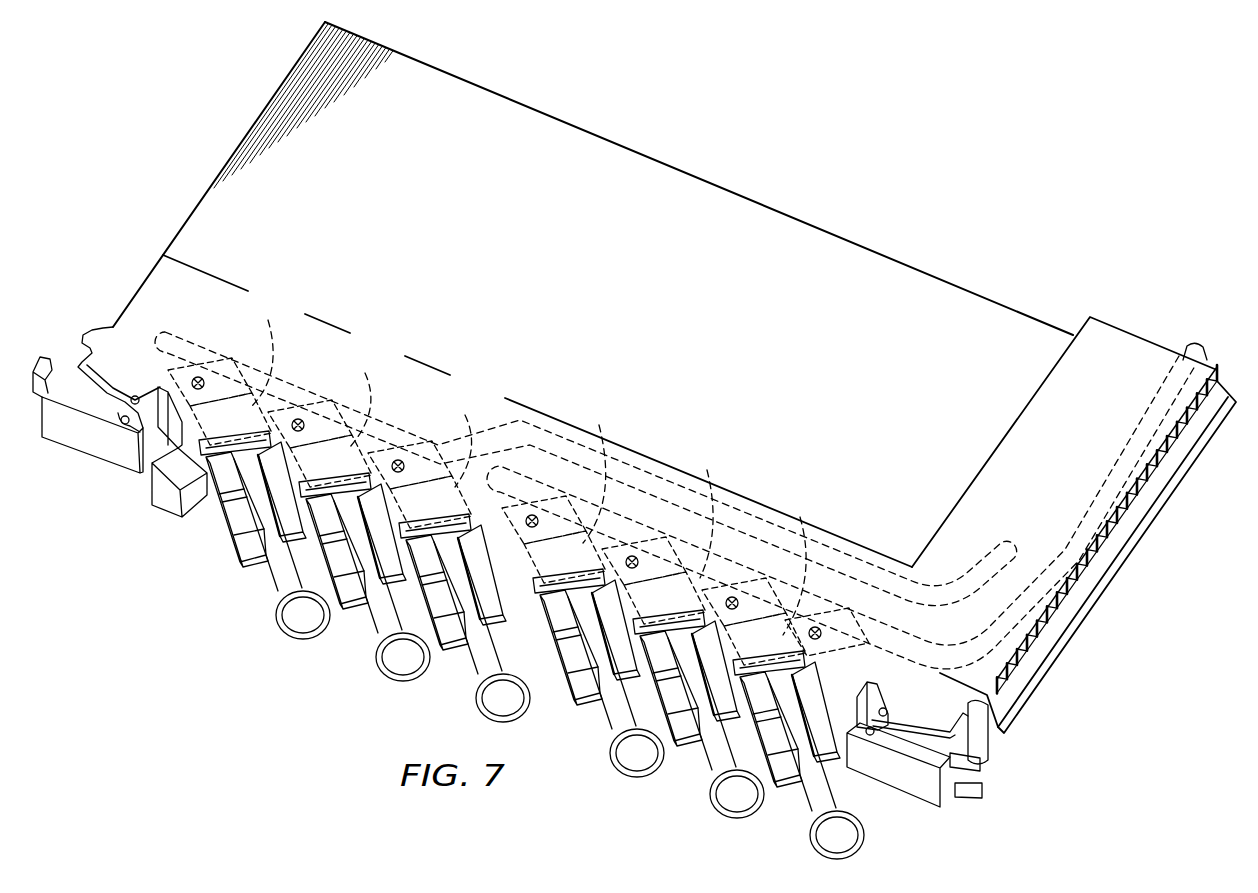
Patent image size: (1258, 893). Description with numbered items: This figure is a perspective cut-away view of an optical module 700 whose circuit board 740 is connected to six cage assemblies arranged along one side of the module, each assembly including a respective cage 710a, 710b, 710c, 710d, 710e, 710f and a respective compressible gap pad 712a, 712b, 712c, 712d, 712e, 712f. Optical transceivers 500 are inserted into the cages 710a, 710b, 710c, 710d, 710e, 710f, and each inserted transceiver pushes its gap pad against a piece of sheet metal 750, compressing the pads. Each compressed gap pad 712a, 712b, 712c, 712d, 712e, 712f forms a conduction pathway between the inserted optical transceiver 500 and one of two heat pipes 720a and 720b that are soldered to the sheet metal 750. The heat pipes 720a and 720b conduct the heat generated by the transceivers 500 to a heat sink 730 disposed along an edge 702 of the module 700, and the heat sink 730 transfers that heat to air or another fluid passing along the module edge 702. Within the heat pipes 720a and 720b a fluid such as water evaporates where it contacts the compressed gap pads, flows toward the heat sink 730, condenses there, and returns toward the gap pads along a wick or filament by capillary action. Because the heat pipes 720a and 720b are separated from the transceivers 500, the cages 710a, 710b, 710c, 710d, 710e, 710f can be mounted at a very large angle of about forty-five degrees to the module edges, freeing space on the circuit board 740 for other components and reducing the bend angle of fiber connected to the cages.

The optical module 700 is at (966, 122).
The edge of the module 702 is at (1093, 605).
The heat sink 730 is at (1123, 351).
The circuit board 740 is at (571, 141).
The sheet metal 750 is at (134, 297).
The optical transceiver 500 is at (222, 565).
The cage 710a is at (210, 368).
The cage 710b is at (310, 400).
The cage 710c is at (410, 437).
The cage 710d is at (540, 500).
The cage 710e is at (643, 550).
The cage 710f is at (743, 593).
The compressible gap pad 712a is at (268, 320).
The compressible gap pad 712b is at (365, 373).
The compressible gap pad 712c is at (465, 415).
The compressible gap pad 712d is at (599, 425).
The compressible gap pad 712e is at (707, 470).
The compressible gap pad 712f is at (800, 517).
The heat pipe 720a is at (512, 404).
The heat pipe 720b is at (1085, 483).